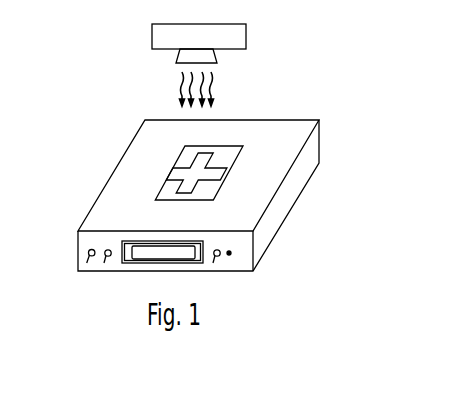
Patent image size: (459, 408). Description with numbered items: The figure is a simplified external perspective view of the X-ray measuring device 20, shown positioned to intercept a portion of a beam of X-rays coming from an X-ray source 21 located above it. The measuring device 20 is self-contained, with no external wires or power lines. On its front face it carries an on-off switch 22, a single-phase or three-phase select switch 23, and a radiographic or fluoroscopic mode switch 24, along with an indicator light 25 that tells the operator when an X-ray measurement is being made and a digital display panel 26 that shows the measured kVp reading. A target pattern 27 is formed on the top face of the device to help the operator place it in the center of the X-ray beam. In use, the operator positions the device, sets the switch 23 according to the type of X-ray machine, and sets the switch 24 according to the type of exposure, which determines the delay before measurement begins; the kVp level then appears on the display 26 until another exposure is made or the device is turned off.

The measuring device 20 is at (317, 167).
The X-ray source 21 is at (246, 36).
The on-off switch 22 is at (88, 258).
The single-phase or three-phase select switch 23 is at (106, 259).
The radiographic or fluoroscopic mode switch 24 is at (216, 258).
The indicator light 25 is at (231, 255).
The digital display panel 26 is at (133, 259).
The target pattern 27 is at (215, 180).